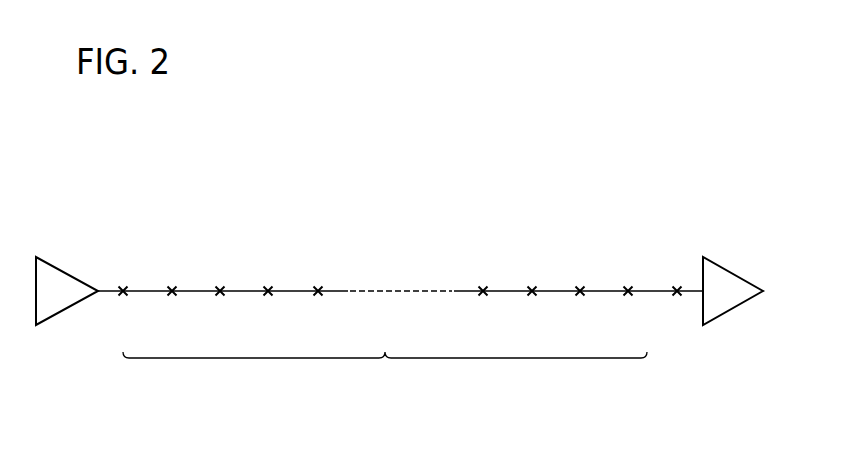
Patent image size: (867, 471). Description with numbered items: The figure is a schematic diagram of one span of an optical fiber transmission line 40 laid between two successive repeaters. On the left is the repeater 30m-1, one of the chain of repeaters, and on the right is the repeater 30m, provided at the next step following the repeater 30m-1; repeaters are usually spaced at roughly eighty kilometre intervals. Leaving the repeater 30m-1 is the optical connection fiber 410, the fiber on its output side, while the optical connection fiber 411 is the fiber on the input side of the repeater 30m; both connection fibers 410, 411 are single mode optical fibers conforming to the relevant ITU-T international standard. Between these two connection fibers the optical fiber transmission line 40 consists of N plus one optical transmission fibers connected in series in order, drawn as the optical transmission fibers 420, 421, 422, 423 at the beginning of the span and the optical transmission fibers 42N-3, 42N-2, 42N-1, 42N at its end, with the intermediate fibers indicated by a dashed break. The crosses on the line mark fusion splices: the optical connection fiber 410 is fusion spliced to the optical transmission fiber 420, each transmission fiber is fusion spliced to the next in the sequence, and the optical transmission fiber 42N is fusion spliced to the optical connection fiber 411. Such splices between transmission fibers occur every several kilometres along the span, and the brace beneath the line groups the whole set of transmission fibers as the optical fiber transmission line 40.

The repeater 30m-1 is at (63, 268).
The repeater 30m is at (728, 270).
The optical connection fiber 410 is at (110, 293).
The optical connection fiber 411 is at (692, 293).
The optical transmission fiber 420 is at (143, 293).
The optical transmission fiber 421 is at (197, 293).
The optical transmission fiber 422 is at (247, 293).
The optical transmission fiber 423 is at (298, 293).
The optical transmission fiber 42N-3 is at (502, 293).
The optical transmission fiber 42N-2 is at (550, 293).
The optical transmission fiber 42N-1 is at (597, 293).
The optical transmission fiber 42N is at (647, 293).
The optical fiber transmission line 40 is at (403, 393).